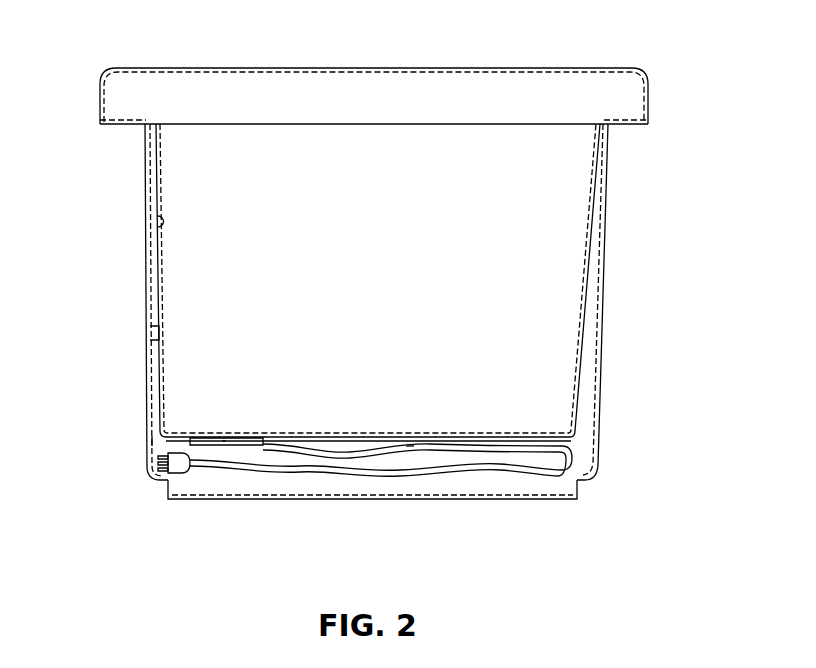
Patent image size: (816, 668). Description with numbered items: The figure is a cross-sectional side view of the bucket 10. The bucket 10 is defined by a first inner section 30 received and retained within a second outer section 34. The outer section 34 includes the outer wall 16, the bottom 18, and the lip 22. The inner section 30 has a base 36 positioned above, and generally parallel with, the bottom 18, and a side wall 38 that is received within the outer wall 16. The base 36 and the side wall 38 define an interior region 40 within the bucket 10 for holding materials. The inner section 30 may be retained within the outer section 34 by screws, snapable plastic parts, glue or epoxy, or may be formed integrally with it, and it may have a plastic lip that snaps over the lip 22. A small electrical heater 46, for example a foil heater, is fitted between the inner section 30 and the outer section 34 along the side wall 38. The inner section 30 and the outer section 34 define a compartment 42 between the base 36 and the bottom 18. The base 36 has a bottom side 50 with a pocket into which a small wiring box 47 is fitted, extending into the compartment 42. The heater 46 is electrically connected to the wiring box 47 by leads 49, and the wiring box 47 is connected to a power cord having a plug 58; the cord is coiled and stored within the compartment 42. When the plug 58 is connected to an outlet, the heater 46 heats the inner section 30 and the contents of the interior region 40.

The bucket 10 is at (133, 167).
The outer wall 16 is at (146, 290).
The bottom 18 is at (261, 511).
The lip 22 is at (649, 82).
The inner section 30 is at (604, 223).
The outer section 34 is at (613, 303).
The base 36 is at (216, 438).
The side wall 38 is at (150, 222).
The interior region 40 is at (427, 154).
The compartment 42 is at (539, 468).
The electrical heater 46 is at (148, 352).
The wiring box 47 is at (224, 444).
The leads 49 is at (150, 441).
The bottom side 50 is at (410, 449).
The plug 58 is at (180, 454).